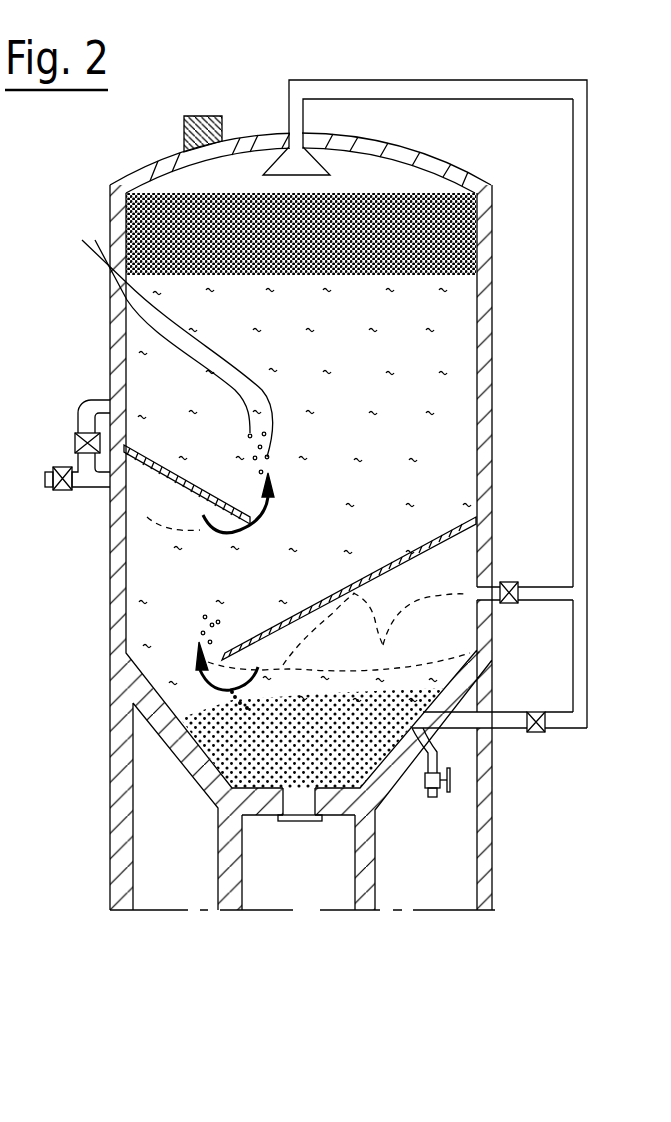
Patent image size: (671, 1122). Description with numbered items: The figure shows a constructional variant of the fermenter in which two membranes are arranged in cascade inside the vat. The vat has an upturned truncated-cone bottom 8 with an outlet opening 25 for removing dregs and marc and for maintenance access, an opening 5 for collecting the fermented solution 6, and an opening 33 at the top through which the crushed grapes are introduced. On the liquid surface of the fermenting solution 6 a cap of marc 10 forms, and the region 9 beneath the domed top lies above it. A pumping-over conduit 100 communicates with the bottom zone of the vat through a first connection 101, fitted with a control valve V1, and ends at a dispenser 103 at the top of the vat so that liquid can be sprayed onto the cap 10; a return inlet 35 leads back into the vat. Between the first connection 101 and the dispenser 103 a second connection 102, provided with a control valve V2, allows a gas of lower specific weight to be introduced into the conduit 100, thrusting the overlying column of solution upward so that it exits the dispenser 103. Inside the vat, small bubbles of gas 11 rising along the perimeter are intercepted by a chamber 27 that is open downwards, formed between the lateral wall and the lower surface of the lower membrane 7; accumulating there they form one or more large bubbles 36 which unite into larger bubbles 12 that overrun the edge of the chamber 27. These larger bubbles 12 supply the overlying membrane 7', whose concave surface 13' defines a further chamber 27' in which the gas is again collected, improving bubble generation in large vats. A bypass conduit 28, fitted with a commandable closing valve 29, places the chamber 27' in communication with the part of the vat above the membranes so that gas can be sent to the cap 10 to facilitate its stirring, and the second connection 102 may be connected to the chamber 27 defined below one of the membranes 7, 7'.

The opening 5 is at (425, 789).
The fermented solution 6 is at (315, 369).
The membrane 7 is at (382, 532).
The membrane 7' is at (159, 406).
The bottom 8 is at (263, 787).
The upper chamber 9 is at (174, 195).
The cap of marc 10 is at (315, 251).
The small bubbles of gas 11 is at (233, 719).
The larger bubbles 12 is at (202, 637).
The concave surface 13' is at (81, 500).
The outlet opening 25 is at (297, 822).
The chamber 27 is at (497, 619).
The chamber 27' is at (84, 549).
The bypass conduit 28 is at (88, 405).
The closing valve 29 is at (75, 442).
The opening 33 is at (207, 116).
The return inlet 35 is at (466, 262).
The large bubbles 36 is at (193, 519).
The pumping-over conduit 100 is at (560, 145).
The first connection 101 is at (503, 730).
The second connection 102 is at (540, 578).
The dispenser 103 is at (300, 164).
The control valve V1 is at (535, 733).
The control valve V2 is at (526, 614).